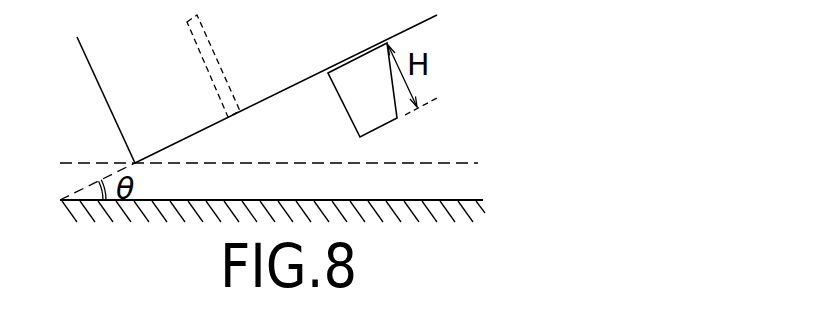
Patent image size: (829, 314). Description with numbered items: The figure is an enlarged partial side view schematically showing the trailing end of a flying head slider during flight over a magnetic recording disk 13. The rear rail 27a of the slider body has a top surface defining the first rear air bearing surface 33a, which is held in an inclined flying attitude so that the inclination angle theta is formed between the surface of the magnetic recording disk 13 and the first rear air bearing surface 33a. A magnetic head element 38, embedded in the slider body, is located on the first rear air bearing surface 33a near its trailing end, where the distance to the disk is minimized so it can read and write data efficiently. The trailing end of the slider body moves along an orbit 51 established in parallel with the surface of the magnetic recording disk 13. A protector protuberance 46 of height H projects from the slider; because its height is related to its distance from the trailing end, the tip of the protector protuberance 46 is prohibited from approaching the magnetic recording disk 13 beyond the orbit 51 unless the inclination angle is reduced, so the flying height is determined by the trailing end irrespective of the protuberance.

The magnetic recording disk 13 is at (468, 203).
The orbit 51 is at (295, 163).
The rear rail 27a is at (118, 106).
The first rear air bearing surface 33a is at (435, 15).
The magnetic head element 38 is at (195, 40).
The protector protuberance 46 is at (385, 115).